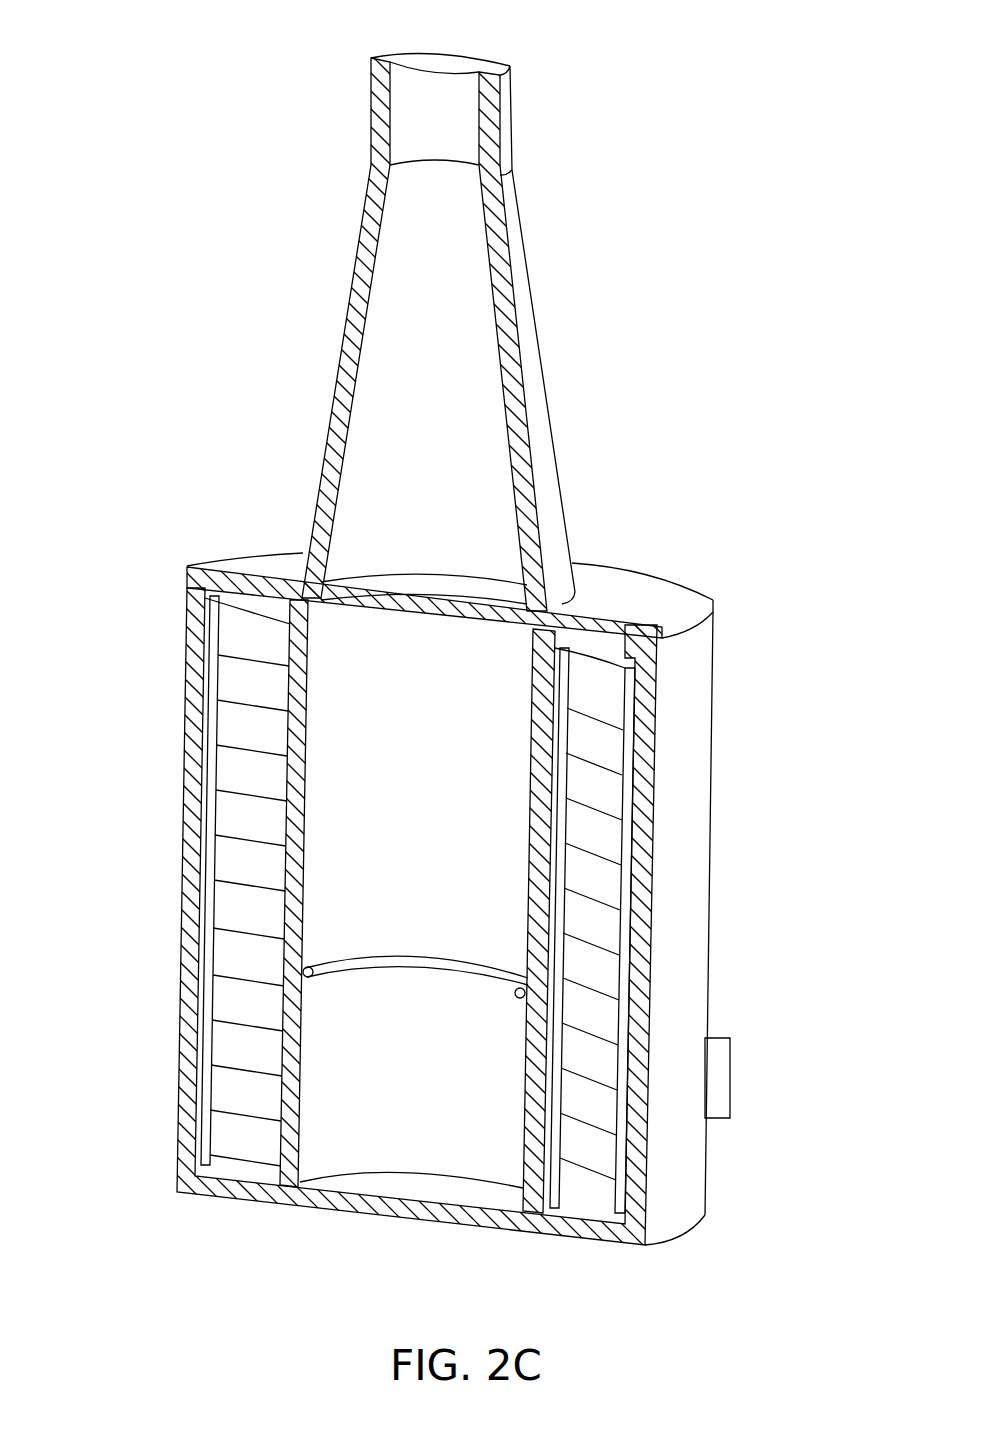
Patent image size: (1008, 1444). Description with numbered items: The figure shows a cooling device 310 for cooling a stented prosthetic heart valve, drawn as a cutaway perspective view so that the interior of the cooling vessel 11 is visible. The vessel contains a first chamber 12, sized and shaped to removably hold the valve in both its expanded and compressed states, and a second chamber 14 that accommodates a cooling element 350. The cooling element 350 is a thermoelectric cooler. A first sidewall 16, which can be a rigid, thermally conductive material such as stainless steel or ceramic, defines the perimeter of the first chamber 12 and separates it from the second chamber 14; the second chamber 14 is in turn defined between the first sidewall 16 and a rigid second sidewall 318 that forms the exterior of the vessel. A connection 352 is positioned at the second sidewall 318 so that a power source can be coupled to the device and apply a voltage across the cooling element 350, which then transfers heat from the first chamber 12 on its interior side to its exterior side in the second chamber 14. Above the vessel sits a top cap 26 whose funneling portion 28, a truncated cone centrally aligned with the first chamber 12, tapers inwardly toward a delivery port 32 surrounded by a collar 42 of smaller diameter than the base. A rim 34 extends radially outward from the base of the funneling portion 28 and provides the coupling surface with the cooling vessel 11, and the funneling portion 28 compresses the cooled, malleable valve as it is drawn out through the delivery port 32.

The cooling vessel 11 is at (126, 907).
The first chamber 12 is at (480, 787).
The second chamber 14 is at (610, 748).
The first sidewall 16 is at (209, 600).
The top cap 26 is at (218, 333).
The funneling portion 28 is at (538, 425).
The delivery port 32 is at (442, 92).
The rim 34 is at (682, 598).
The collar 42 is at (509, 120).
The cooling device 310 is at (812, 300).
The second sidewall 318 is at (690, 975).
The cooling element 350 is at (235, 733).
The connection 352 is at (730, 1075).